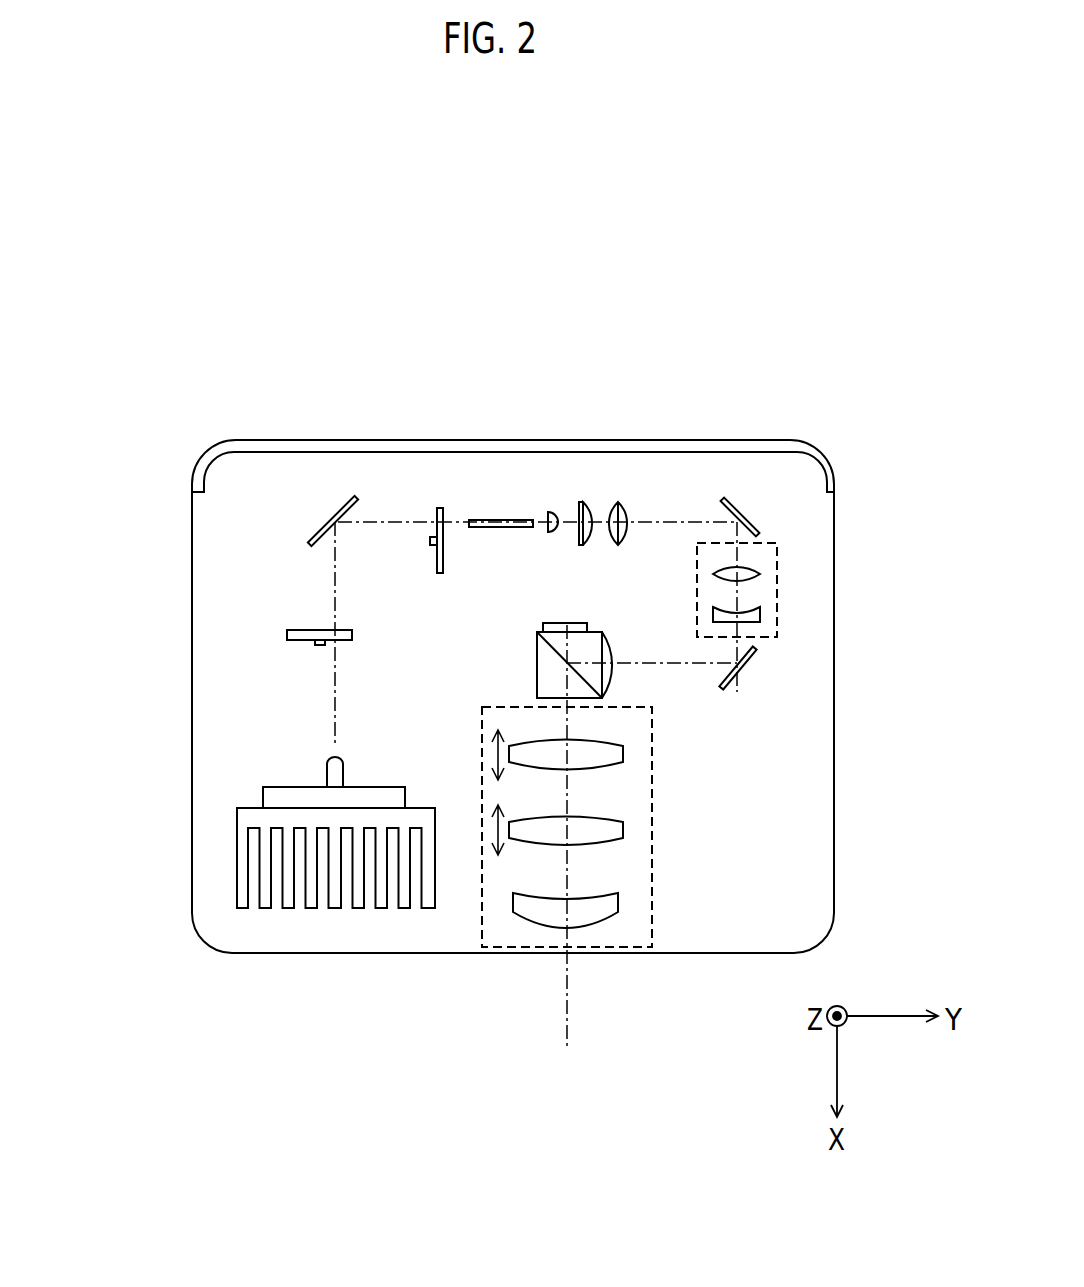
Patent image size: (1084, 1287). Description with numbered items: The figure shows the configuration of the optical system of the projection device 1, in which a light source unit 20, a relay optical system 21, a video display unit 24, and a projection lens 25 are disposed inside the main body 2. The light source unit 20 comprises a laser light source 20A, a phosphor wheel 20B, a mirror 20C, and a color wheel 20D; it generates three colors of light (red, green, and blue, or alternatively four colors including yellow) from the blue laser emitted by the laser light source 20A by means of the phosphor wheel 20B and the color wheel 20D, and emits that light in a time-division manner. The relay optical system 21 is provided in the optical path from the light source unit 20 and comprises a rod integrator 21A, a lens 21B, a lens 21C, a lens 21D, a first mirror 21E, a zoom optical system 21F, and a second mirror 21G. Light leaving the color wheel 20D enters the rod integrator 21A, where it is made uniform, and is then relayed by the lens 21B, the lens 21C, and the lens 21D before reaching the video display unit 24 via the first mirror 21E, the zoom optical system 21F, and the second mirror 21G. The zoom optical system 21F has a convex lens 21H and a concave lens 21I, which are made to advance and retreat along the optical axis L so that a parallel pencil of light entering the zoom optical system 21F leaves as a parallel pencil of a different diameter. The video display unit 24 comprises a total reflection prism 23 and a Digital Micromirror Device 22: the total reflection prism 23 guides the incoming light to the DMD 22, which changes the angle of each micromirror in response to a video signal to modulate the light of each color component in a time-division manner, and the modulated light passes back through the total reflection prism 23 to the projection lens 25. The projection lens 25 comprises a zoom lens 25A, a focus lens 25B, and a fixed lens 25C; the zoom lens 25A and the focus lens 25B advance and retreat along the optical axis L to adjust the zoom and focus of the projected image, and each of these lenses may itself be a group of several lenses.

The projection device 1 is at (217, 372).
The main body 2 is at (286, 420).
The light source unit 20 is at (100, 437).
The laser light source 20A is at (244, 795).
The phosphor wheel 20B is at (287, 632).
The mirror 20C is at (340, 507).
The color wheel 20D is at (438, 507).
The relay optical system 21 is at (910, 380).
The rod integrator 21A is at (549, 517).
The lens 21B is at (502, 520).
The lens 21C is at (583, 502).
The lens 21D is at (618, 502).
The first mirror 21E is at (723, 498).
The zoom optical system 21F is at (720, 508).
The second mirror 21G is at (757, 651).
The convex lens 21H is at (713, 574).
The concave lens 21I is at (713, 612).
The Digital Micromirror Device (DMD) 22 is at (567, 625).
The total reflection prism 23 is at (548, 660).
The video display unit 24 is at (455, 595).
The projection lens 25 is at (740, 722).
The zoom lens 25A is at (613, 754).
The focus lens 25B is at (613, 830).
The fixed lens 25C is at (613, 903).
The optical axis L is at (566, 1062).